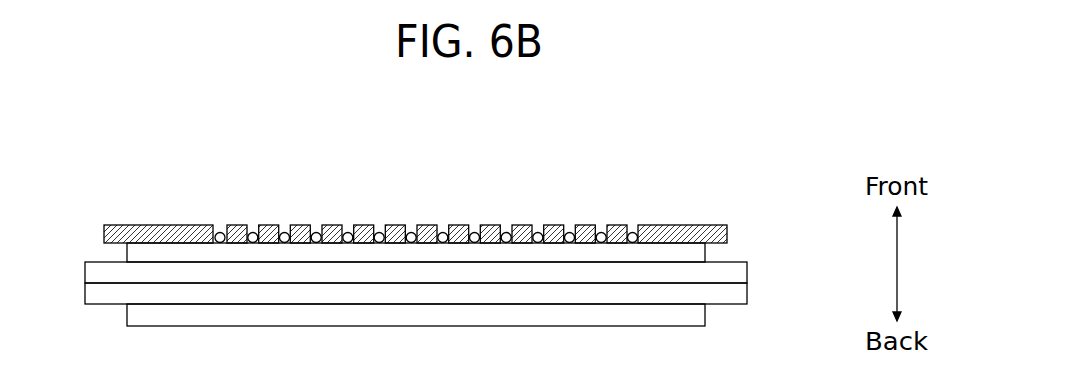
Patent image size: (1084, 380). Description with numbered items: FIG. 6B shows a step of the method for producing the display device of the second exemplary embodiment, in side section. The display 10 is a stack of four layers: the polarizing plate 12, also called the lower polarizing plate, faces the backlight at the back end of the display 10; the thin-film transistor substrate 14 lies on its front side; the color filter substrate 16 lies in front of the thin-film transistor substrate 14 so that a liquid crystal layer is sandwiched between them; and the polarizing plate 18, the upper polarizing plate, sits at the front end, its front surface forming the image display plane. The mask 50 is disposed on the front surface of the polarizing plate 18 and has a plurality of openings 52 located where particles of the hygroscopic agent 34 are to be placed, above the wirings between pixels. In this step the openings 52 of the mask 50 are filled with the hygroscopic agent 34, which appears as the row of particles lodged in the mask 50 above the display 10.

The display 10 is at (469, 291).
The polarizing plate 12 is at (467, 324).
The thin-film transistor substrate 14 is at (747, 294).
The color filter substrate 16 is at (747, 272).
The polarizing plate 18 is at (705, 250).
The hygroscopic agent 34 is at (473, 222).
The mask 50 is at (681, 221).
The openings 52 is at (347, 222).